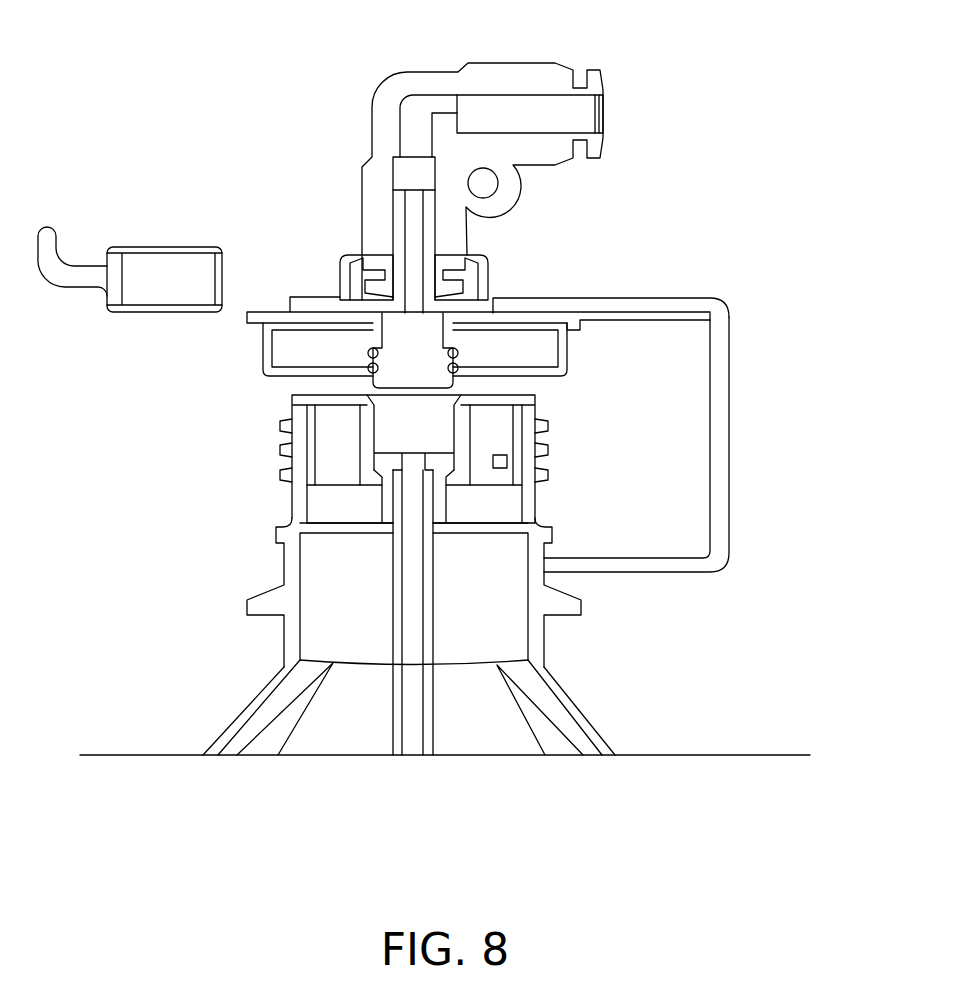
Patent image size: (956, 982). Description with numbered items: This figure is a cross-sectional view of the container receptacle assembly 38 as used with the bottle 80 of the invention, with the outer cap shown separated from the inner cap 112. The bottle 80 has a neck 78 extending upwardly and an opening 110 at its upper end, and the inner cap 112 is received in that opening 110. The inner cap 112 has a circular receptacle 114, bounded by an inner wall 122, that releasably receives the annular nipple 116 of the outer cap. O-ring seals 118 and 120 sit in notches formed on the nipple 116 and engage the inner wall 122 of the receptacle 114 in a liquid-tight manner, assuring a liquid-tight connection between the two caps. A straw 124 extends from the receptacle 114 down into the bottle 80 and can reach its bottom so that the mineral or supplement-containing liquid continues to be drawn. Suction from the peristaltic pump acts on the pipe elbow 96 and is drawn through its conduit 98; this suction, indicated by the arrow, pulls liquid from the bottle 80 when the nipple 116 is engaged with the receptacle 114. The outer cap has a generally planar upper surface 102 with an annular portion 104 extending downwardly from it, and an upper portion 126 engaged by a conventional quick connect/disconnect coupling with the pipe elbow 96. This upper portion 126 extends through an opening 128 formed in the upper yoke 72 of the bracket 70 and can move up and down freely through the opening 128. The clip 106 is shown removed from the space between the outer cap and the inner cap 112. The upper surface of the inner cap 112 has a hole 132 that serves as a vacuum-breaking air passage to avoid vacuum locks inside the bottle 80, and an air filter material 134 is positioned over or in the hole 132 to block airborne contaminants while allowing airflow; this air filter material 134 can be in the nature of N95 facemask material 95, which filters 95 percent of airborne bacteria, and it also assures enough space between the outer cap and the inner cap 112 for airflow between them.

The container receptacle assembly 38 is at (652, 177).
The bracket 70 is at (729, 426).
The upper yoke 72 is at (680, 298).
The neck 78 is at (284, 570).
The bottle 80 is at (583, 718).
The bracket 95 is at (583, 327).
The pipe elbow 96 is at (418, 72).
The conduit 98 is at (522, 112).
The planar upper surface 102 is at (565, 317).
The annular portion 104 is at (568, 360).
The clip 106 is at (218, 268).
The opening 110 is at (527, 400).
The inner cap 112 is at (499, 468).
The receptacle 114 is at (414, 432).
The nipple 116 is at (673, 330).
The O-ring seal 118 is at (368, 353).
The O-ring seal 120 is at (458, 369).
The inner wall 122 is at (371, 442).
The straw 124 is at (433, 582).
The upper portion 126 is at (490, 278).
The opening 128 is at (340, 300).
The hole 132 is at (352, 398).
The air filter material 134 is at (335, 402).